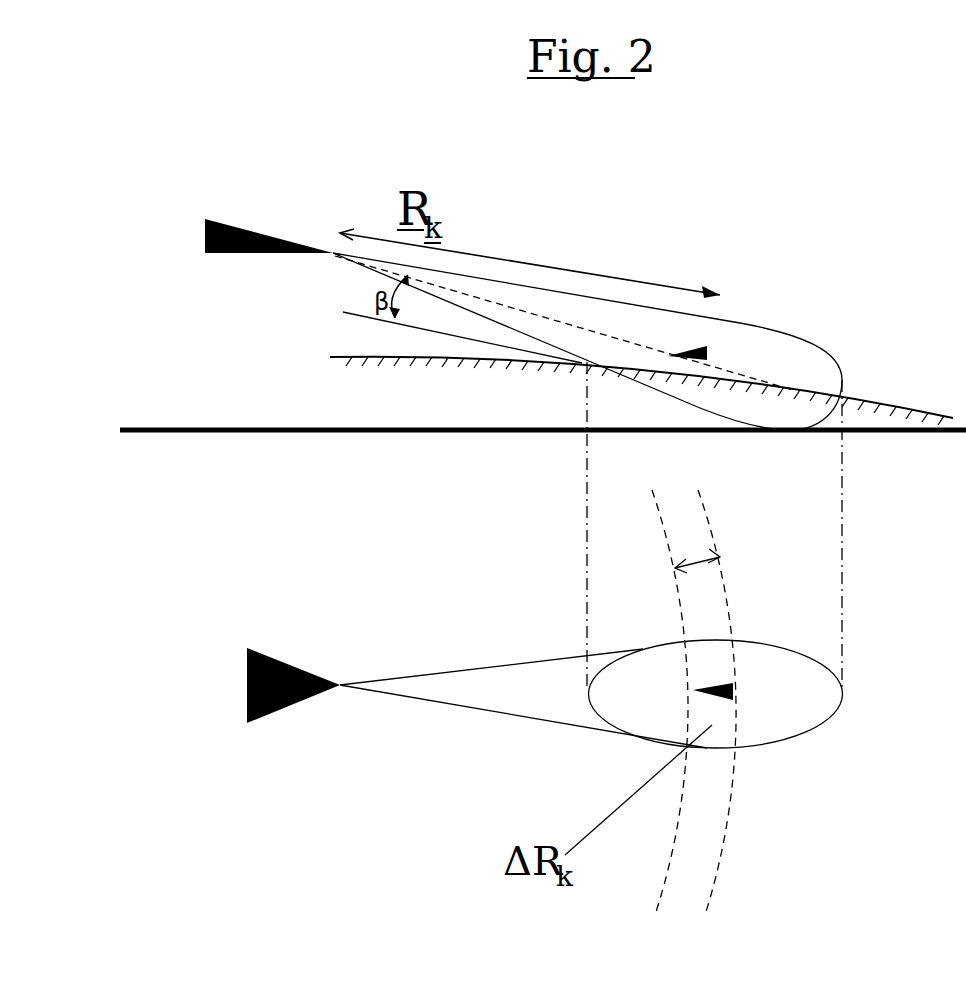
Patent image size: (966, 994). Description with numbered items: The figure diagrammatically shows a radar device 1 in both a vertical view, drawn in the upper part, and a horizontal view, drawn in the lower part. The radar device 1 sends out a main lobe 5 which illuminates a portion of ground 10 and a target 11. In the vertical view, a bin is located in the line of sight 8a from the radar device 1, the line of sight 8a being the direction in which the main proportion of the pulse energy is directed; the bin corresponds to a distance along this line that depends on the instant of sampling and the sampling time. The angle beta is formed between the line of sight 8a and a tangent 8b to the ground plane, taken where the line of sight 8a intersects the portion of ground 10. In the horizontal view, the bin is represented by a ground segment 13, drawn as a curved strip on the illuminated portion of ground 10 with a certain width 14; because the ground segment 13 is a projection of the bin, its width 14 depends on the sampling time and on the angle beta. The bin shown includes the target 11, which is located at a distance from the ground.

The radar device 1 is at (223, 222).
The main lobe 5 is at (772, 347).
The line of sight 8a is at (487, 298).
The tangent to the ground plane 8b is at (363, 313).
The portion of ground 10 is at (817, 393).
The target 11 is at (703, 347).
The ground segment 13 is at (723, 725).
The width 14 is at (722, 555).